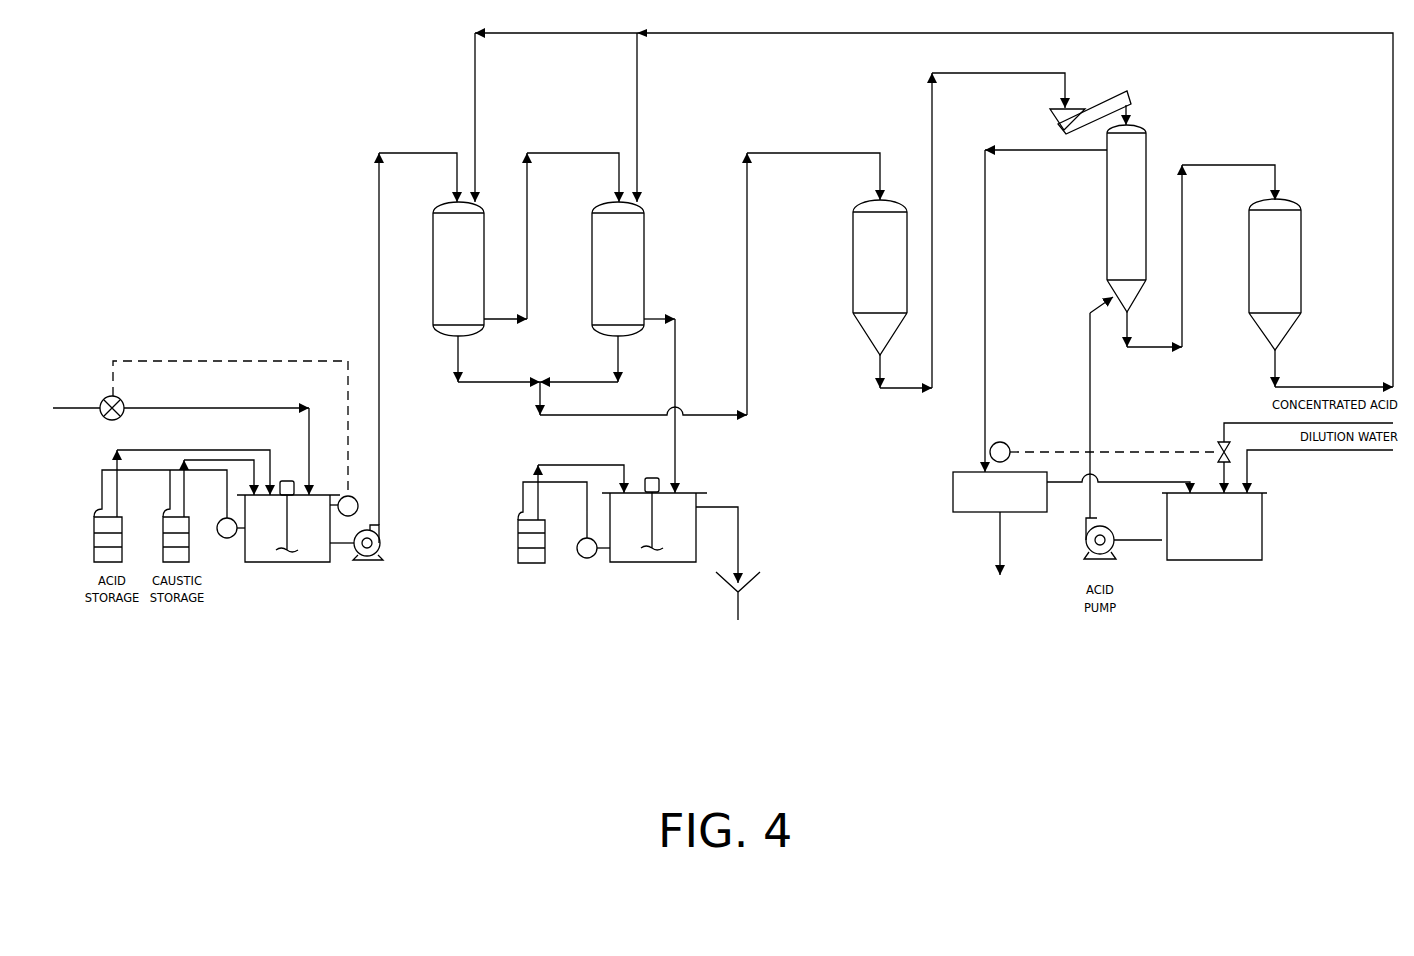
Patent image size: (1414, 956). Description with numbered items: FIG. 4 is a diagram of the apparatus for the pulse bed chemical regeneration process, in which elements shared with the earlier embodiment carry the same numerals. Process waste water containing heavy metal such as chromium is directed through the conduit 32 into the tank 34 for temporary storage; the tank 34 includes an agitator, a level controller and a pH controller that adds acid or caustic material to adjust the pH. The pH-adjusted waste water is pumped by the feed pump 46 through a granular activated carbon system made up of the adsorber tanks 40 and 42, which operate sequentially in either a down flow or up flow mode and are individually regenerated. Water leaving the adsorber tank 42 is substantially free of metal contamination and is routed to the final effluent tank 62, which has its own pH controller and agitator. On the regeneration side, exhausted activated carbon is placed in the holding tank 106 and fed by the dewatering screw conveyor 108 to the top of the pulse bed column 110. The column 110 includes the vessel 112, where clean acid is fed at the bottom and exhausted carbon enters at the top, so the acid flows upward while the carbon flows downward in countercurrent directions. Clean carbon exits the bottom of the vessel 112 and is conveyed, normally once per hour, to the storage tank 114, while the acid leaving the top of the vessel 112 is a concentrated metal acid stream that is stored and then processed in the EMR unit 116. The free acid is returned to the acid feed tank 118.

The conduit 32 is at (180, 409).
The tank 34 is at (262, 553).
The feed pump 46 is at (381, 530).
The adsorber tank 40 is at (437, 250).
The adsorber tank 42 is at (637, 242).
The final effluent tank 62 is at (688, 500).
The holding tank 106 is at (858, 283).
The dewatering screw conveyor 108 is at (932, 135).
The pulse bed column 110 is at (1110, 175).
The vessel 112 is at (1113, 257).
The storage tank 114 is at (1293, 227).
The EMR unit 116 is at (953, 495).
The acid feed tank 118 is at (1255, 523).